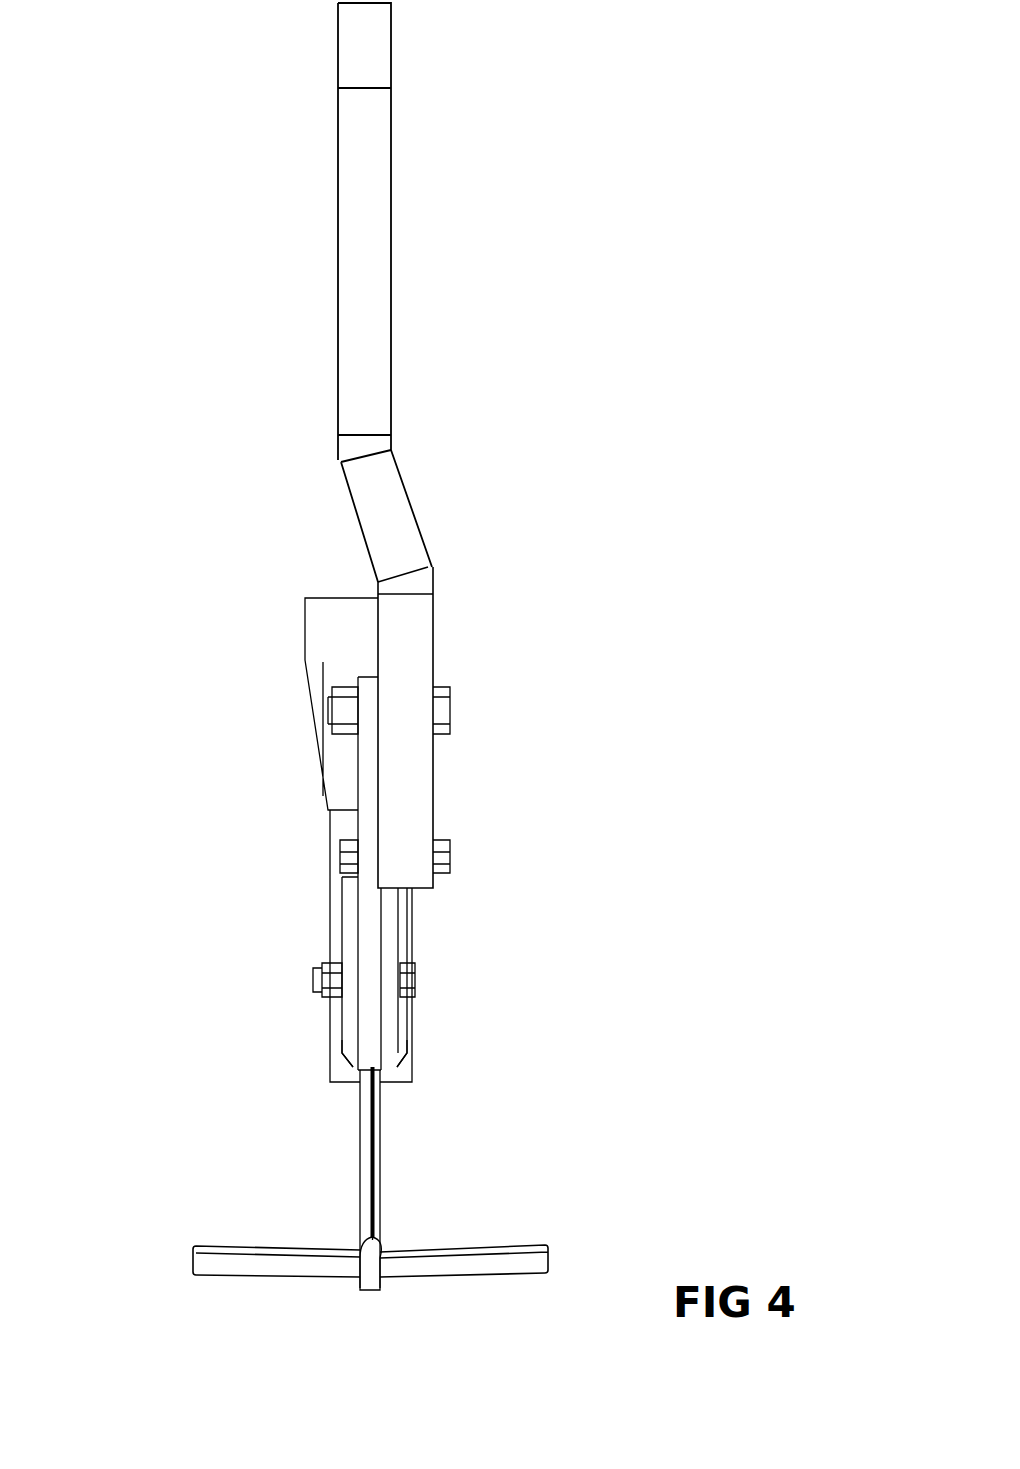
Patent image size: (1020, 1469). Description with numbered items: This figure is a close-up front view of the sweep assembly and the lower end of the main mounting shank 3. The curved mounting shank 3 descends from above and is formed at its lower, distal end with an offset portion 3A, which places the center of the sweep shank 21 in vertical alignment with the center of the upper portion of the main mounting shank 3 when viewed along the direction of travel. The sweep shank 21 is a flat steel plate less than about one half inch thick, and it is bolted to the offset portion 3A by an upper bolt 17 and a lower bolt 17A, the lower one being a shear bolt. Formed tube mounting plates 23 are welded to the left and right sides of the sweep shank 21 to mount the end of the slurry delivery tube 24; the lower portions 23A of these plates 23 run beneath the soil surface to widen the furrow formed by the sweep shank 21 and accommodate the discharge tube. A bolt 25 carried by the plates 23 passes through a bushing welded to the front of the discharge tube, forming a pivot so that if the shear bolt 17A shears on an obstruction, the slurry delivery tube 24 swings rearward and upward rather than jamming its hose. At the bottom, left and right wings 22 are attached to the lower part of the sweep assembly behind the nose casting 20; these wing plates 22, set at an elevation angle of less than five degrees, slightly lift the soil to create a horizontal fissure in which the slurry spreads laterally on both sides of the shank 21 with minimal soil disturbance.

The main mounting shank 3 is at (392, 362).
The offset portion 3A is at (413, 645).
The upper bolt 17 is at (450, 708).
The shear bolt 17A is at (450, 853).
The nose casting 20 is at (372, 1275).
The sweep shank 21 is at (357, 780).
The wings 22 is at (263, 1247).
The tube mounting plates 23 is at (343, 927).
The lower portions of tube mounting plates 23A is at (342, 1023).
The slurry delivery tube 24 is at (316, 630).
The bolt 25 is at (313, 980).